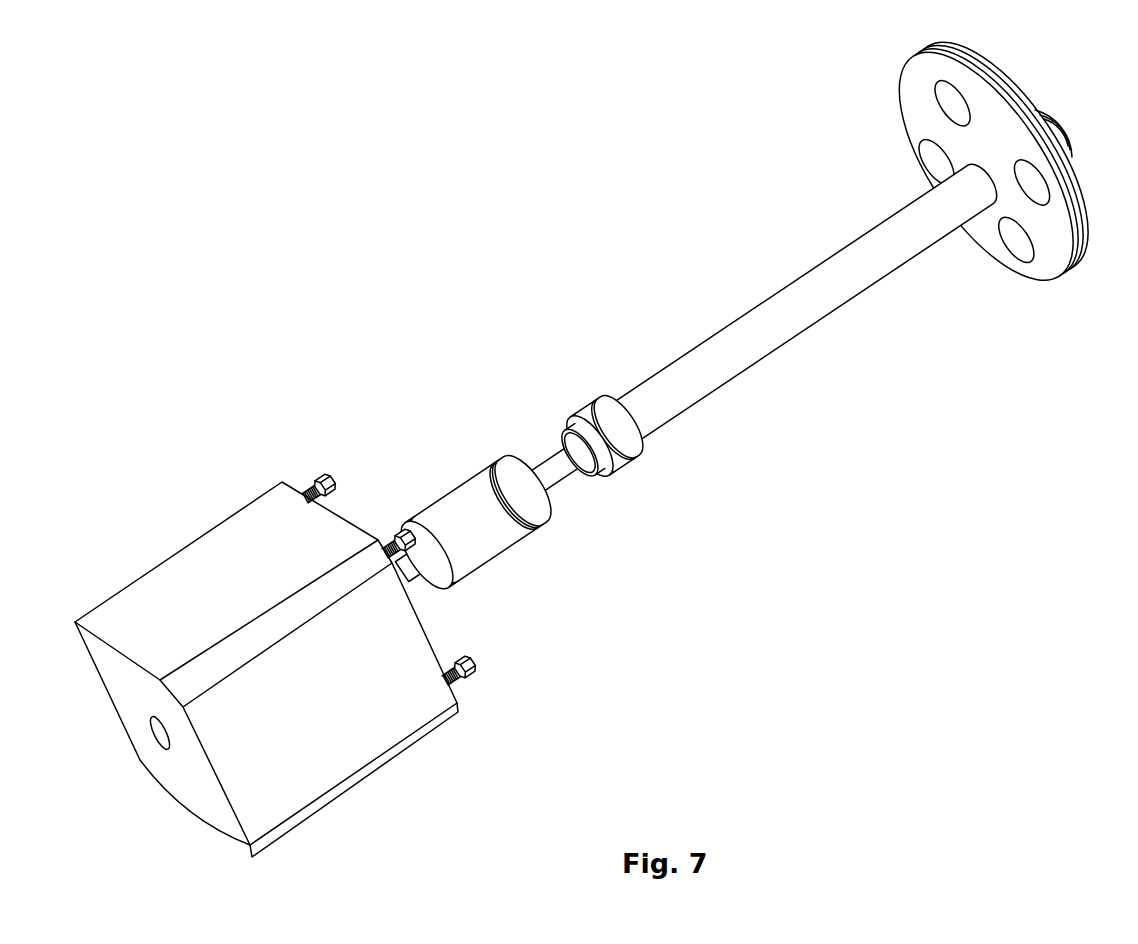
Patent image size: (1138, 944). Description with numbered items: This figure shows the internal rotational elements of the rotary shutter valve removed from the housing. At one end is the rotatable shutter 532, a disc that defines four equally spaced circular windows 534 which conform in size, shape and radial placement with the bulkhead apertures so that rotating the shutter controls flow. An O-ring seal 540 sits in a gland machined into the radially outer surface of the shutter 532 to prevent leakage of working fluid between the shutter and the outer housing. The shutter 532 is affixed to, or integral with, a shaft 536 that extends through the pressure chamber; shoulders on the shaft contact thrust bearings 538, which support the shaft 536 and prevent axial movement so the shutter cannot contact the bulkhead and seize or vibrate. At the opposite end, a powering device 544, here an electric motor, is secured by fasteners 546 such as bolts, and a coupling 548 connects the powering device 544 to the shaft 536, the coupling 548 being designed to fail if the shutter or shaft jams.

The rotatable shutter 532 is at (982, 231).
The windows 534 is at (933, 98).
The shaft 536 is at (753, 313).
The thrust bearings 538 is at (640, 460).
The O-ring seal 540 is at (1078, 266).
The powering device 544 is at (235, 512).
The fasteners 546 is at (478, 667).
The coupling 548 is at (465, 510).